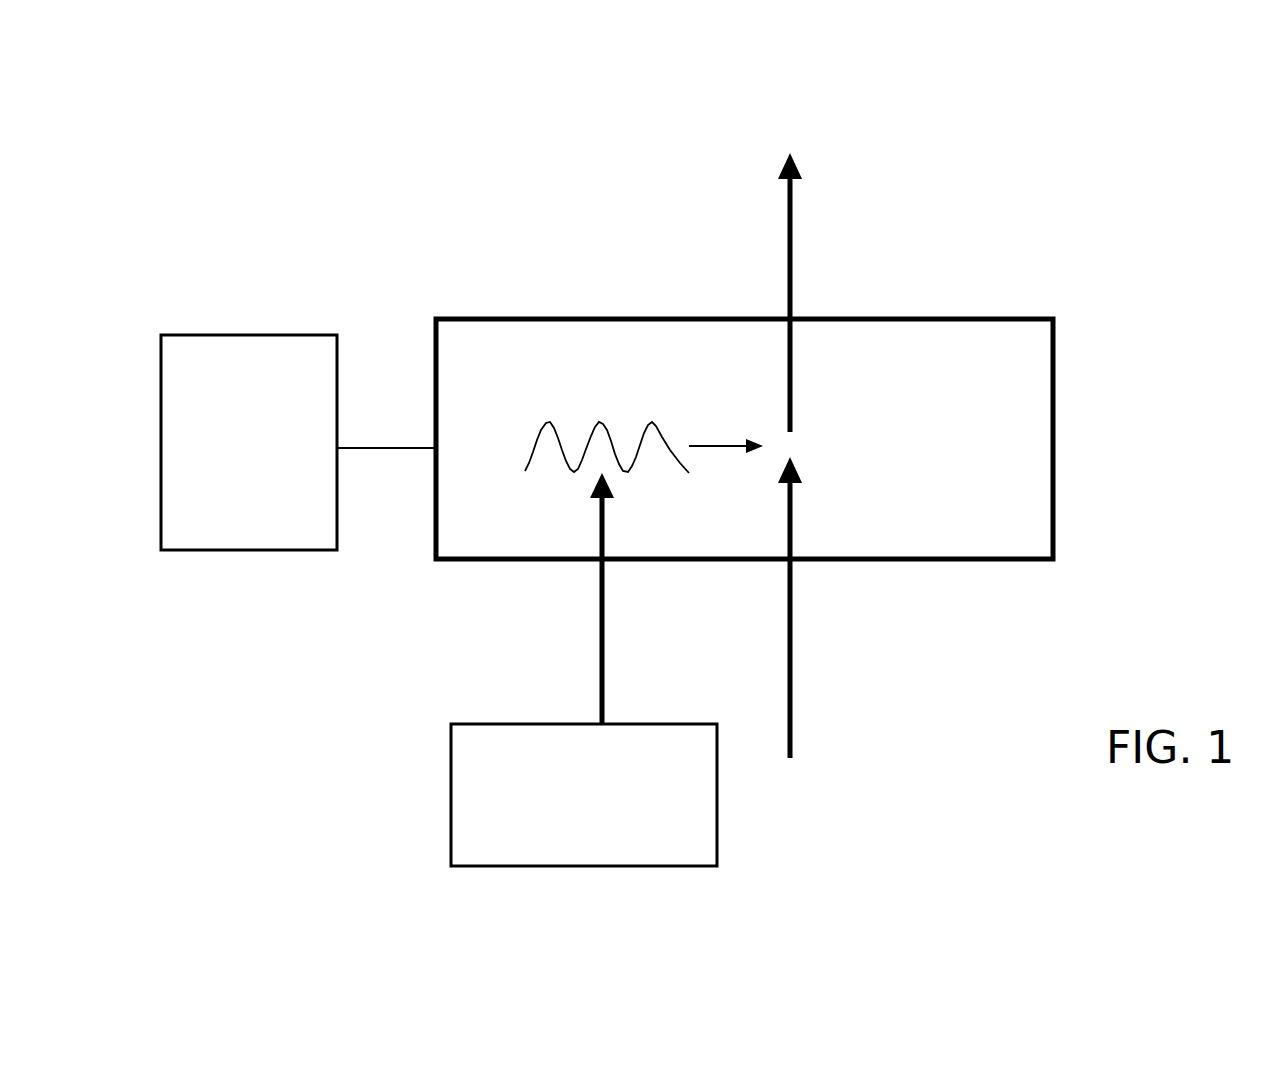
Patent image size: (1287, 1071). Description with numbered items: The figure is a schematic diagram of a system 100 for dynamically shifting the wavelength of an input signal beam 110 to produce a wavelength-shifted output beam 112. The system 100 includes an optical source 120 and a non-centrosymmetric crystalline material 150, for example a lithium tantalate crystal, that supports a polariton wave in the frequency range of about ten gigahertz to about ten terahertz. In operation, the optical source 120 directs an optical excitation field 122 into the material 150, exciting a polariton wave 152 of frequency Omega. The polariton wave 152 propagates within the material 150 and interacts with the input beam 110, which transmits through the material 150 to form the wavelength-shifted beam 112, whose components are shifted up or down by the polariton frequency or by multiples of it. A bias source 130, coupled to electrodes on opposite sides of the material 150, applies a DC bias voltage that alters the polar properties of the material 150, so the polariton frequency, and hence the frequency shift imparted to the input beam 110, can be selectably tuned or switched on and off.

The system 100 is at (388, 188).
The input signal beam 110 is at (786, 647).
The wavelength-shifted output beam 112 is at (784, 255).
The optical source 120 is at (450, 807).
The optical excitation field 122 is at (598, 636).
The bias source 130 is at (248, 524).
The non-centrosymmetric crystalline material 150 is at (982, 389).
The polariton wave 152 is at (566, 415).